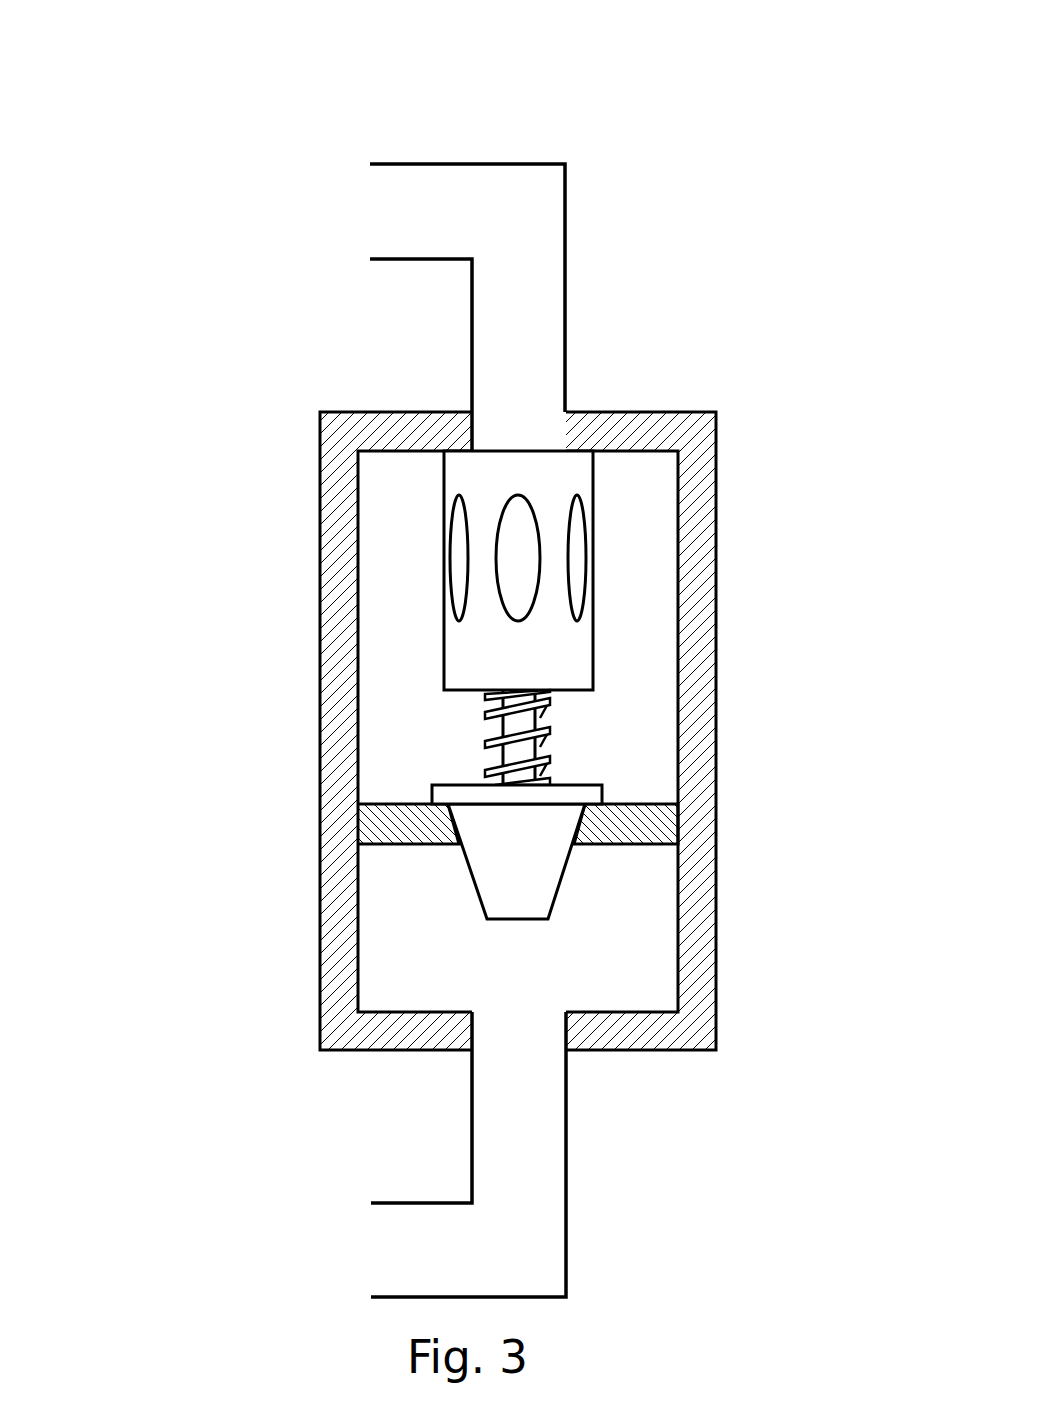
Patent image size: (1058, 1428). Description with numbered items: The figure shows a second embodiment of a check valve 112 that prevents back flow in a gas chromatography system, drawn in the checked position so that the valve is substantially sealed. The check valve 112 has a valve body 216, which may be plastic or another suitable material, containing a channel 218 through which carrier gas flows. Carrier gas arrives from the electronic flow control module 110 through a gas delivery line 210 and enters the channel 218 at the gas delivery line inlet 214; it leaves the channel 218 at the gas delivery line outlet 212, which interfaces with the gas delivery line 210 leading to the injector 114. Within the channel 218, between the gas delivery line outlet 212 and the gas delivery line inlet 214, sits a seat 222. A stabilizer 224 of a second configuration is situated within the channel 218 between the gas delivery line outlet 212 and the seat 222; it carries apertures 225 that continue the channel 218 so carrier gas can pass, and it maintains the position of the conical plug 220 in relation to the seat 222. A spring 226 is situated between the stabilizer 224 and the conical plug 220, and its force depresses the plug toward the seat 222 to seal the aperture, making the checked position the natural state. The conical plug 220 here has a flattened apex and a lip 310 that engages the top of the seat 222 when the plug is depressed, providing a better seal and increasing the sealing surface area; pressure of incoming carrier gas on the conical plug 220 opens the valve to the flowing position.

The check valve 112 is at (108, 95).
The electronic flow control module 110 is at (408, 1234).
The injector 114 is at (463, 193).
The gas delivery line 210 is at (565, 322).
The gas delivery line outlet 212 is at (470, 416).
The gas delivery line inlet 214 is at (468, 1047).
The valve body 216 is at (716, 480).
The channel 218 is at (372, 912).
The conical plug 220 is at (538, 835).
The seat 222 is at (678, 830).
The stabilizer 224 is at (519, 570).
The apertures 225 is at (390, 558).
The spring 226 is at (545, 722).
The lip 310 is at (502, 754).